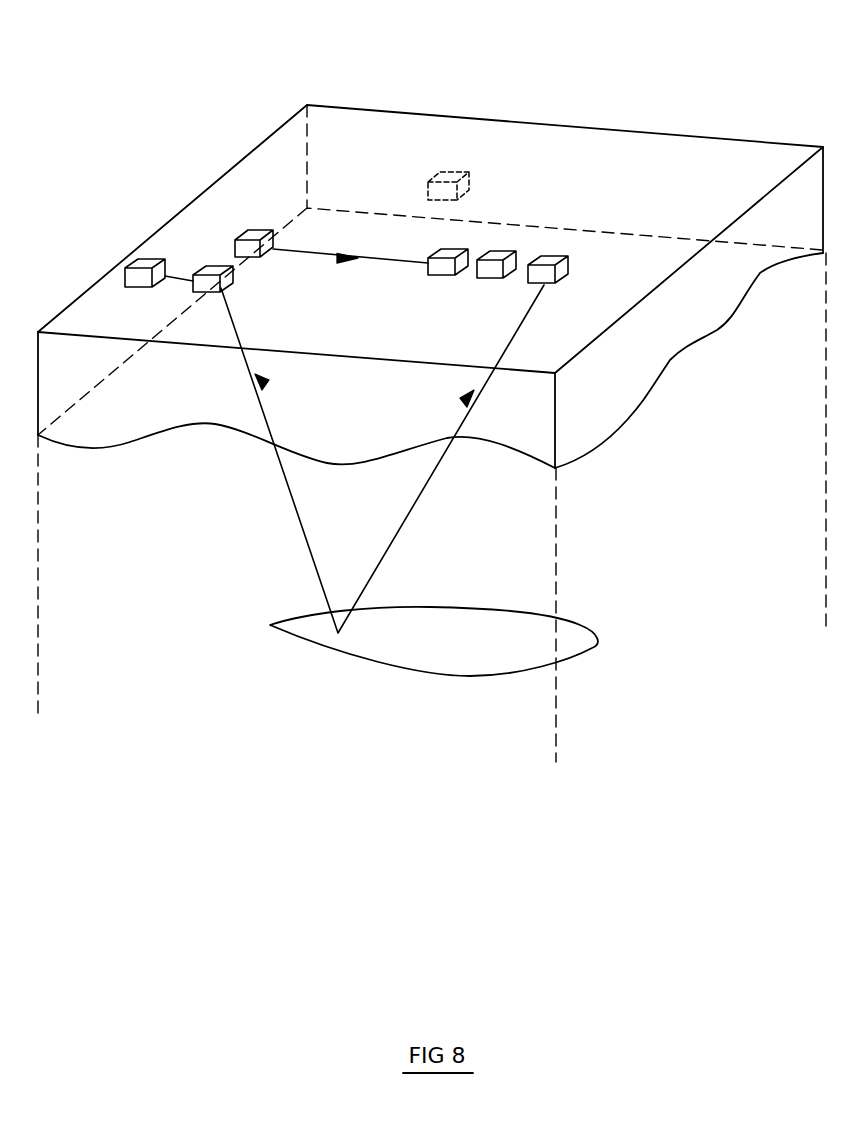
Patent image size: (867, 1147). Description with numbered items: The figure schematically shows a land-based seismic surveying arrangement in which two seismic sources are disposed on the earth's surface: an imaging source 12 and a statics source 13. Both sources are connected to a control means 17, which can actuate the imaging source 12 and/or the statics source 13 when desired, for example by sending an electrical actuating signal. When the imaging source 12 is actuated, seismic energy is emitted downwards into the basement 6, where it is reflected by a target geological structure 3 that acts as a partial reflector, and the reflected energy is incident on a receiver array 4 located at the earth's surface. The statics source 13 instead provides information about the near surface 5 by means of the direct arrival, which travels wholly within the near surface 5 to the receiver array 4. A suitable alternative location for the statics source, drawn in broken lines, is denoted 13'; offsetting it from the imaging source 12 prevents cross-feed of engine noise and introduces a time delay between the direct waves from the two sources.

The target geological structure 3 is at (450, 675).
The receiver array 4 is at (453, 247).
The near surface 5 is at (430, 360).
The basement 6 is at (703, 504).
The imaging source 12 is at (210, 293).
The statics source 13 is at (246, 137).
The statics source (alternative location) 13' is at (493, 117).
The control means 17 is at (145, 262).